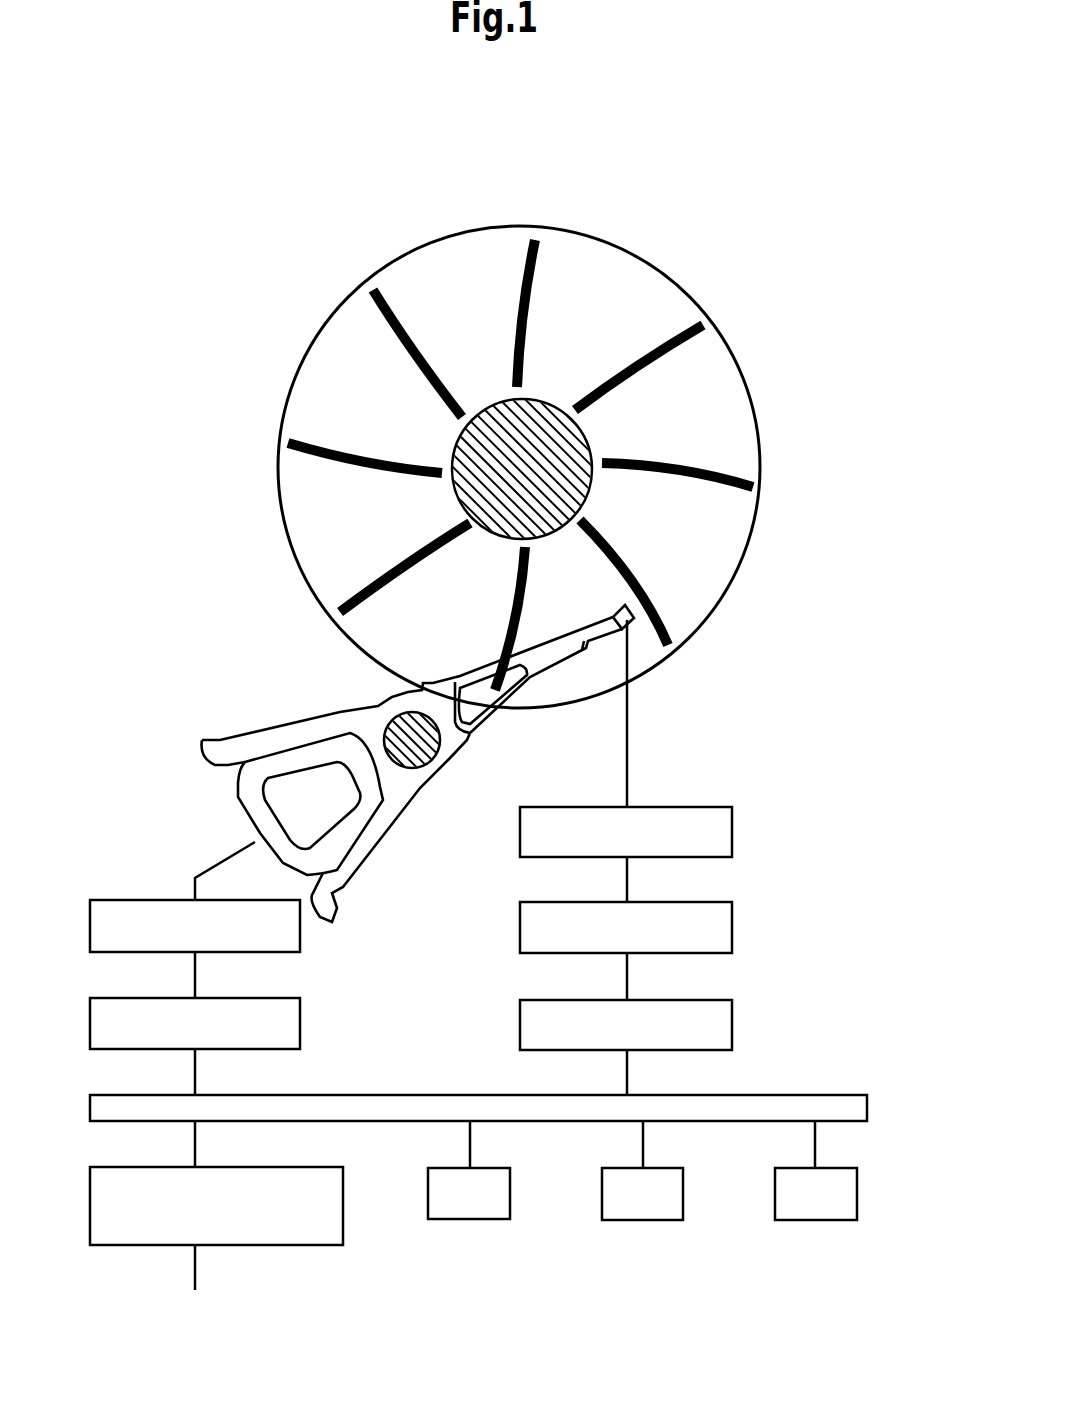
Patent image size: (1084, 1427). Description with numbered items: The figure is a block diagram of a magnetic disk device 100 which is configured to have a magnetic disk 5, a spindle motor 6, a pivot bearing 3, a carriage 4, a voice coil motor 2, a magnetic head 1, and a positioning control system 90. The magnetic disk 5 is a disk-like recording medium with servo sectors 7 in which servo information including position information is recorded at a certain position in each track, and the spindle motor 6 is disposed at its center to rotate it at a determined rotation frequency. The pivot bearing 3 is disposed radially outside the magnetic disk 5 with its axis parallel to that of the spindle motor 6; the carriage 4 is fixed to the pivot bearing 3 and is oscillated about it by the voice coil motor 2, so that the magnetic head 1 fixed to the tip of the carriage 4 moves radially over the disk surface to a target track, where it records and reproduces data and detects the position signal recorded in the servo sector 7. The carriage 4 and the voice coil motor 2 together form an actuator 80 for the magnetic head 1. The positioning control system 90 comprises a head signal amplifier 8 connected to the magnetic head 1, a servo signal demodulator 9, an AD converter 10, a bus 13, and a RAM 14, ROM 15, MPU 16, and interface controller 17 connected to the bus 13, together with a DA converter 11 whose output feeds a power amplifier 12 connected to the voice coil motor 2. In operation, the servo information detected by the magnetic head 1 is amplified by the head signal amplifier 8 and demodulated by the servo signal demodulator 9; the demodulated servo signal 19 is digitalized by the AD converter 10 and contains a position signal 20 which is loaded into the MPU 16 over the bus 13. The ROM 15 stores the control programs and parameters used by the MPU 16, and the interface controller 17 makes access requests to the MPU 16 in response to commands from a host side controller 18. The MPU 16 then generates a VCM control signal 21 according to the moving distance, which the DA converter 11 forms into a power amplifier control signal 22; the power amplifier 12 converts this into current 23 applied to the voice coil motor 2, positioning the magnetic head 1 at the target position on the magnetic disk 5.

The magnetic disk device 100 is at (768, 143).
The actuator 80 is at (403, 748).
The positioning control system 90 is at (700, 770).
The magnetic disk 5 is at (760, 421).
The spindle motor 6 is at (452, 447).
The servo sectors 7 is at (715, 490).
The magnetic head 1 is at (615, 608).
The voice coil motor 2 is at (290, 745).
The pivot bearing 3 is at (385, 712).
The carriage 4 is at (470, 742).
The head signal amplifier 8 is at (733, 828).
The servo signal demodulator 9 is at (733, 925).
The AD converter 10 is at (733, 1025).
The DA converter 11 is at (300, 1020).
The power amplifier 12 is at (108, 898).
The bus 13 is at (867, 1112).
The RAM 14 is at (857, 1202).
The ROM 15 is at (683, 1200).
The MPU 16 is at (510, 1200).
The interface controller 17 is at (343, 1200).
The host side controller 18 is at (259, 1288).
The demodulated servo signal 19 is at (627, 975).
The position signal 20 is at (627, 1072).
The VCM control signal 21 is at (195, 1072).
The power amplifier control signal 22 is at (195, 973).
The current 23 is at (193, 890).